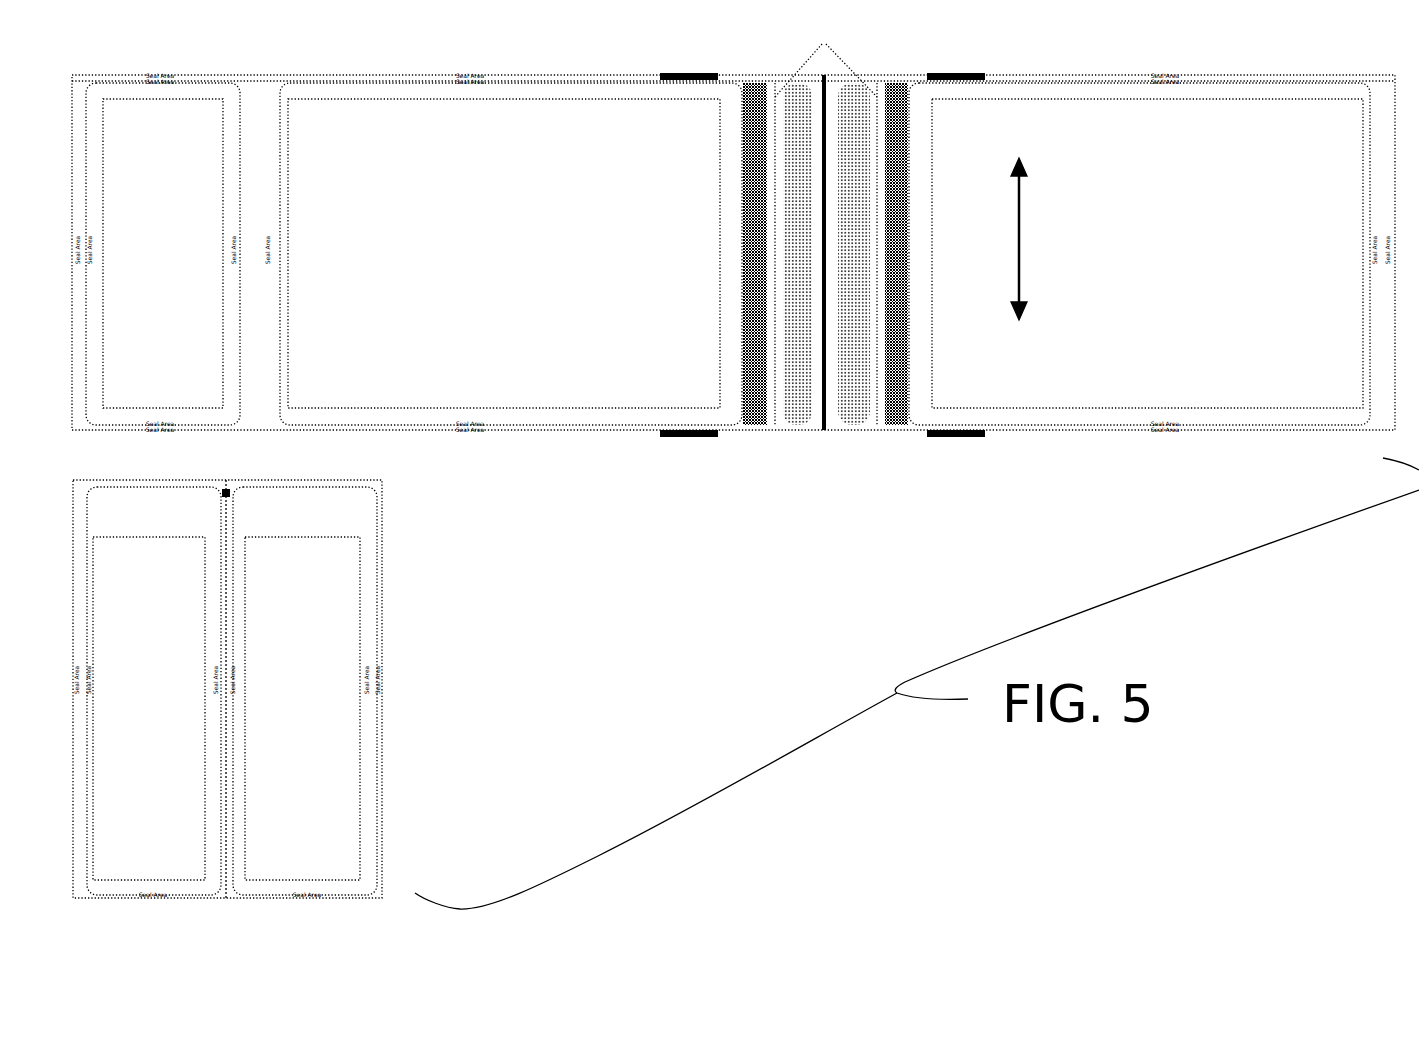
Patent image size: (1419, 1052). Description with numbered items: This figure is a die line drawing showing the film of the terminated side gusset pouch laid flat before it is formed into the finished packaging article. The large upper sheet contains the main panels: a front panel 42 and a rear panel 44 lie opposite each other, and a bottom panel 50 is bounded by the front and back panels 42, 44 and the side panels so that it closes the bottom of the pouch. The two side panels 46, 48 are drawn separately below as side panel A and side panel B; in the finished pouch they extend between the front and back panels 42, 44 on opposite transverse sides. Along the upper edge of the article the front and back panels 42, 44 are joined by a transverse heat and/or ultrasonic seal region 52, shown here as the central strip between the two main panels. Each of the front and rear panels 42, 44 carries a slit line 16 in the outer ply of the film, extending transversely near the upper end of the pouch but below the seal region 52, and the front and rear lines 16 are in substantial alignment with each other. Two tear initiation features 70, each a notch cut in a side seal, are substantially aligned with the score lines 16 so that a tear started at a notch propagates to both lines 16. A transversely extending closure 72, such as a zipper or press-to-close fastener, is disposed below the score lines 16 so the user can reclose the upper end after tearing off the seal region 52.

The slit line 16 is at (773, 388).
The front panel 42 is at (1127, 357).
The rear panel 44 is at (458, 321).
The side panel 46 is at (162, 662).
The side panel 48 is at (305, 691).
The bottom panel 50 is at (165, 346).
The transverse heat and/or ultrasonic seal region 52 is at (852, 385).
The tear initiation feature 70 is at (775, 85).
The closure 72 is at (750, 365).